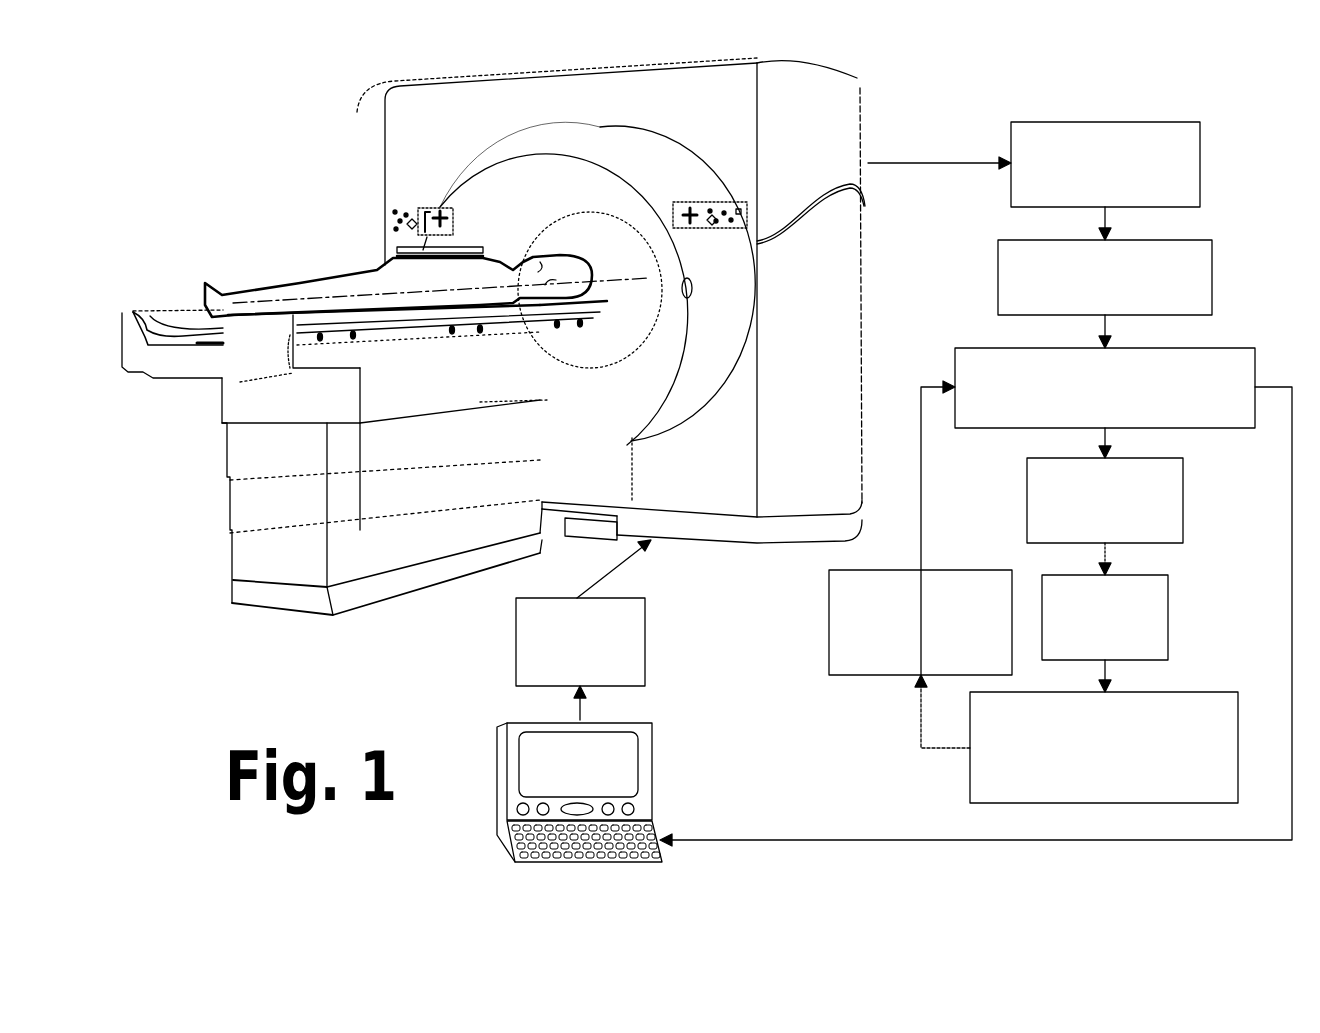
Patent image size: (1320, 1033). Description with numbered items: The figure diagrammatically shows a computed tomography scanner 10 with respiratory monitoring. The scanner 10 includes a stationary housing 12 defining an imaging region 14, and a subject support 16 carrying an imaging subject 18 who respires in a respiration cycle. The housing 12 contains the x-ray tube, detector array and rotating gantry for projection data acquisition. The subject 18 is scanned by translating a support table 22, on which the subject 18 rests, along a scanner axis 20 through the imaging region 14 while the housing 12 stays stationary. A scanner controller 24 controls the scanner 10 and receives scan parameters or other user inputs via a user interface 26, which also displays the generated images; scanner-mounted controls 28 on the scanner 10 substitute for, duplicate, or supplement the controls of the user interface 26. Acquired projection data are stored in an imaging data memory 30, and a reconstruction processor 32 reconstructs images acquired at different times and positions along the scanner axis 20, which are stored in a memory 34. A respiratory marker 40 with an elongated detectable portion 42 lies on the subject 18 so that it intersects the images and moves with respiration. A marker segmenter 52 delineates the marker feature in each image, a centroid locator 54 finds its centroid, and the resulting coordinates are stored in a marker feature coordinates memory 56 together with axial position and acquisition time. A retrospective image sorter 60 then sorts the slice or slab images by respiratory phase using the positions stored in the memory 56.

The computed tomography scanner 10 is at (257, 141).
The stationary housing 12 is at (833, 118).
The imaging region 14 is at (580, 243).
The subject support 16 is at (195, 466).
The imaging subject 18 is at (337, 287).
The scanner axis 20 is at (622, 281).
The support table 22 is at (188, 317).
The scanner controller 24 is at (513, 642).
The user interface 26 is at (652, 783).
The scanner-mounted controls 28 is at (713, 197).
The imaging data memory 30 is at (1200, 160).
The reconstruction processor 32 is at (1212, 272).
The memory 34 is at (1238, 345).
The respiratory marker 40 is at (472, 226).
The elongated detectable portion 42 is at (400, 249).
The marker segmenter 52 is at (1183, 498).
The centroid locator 54 is at (1168, 612).
The marker feature coordinates memory 56 is at (1210, 690).
The retrospective image sorter 60 is at (972, 568).